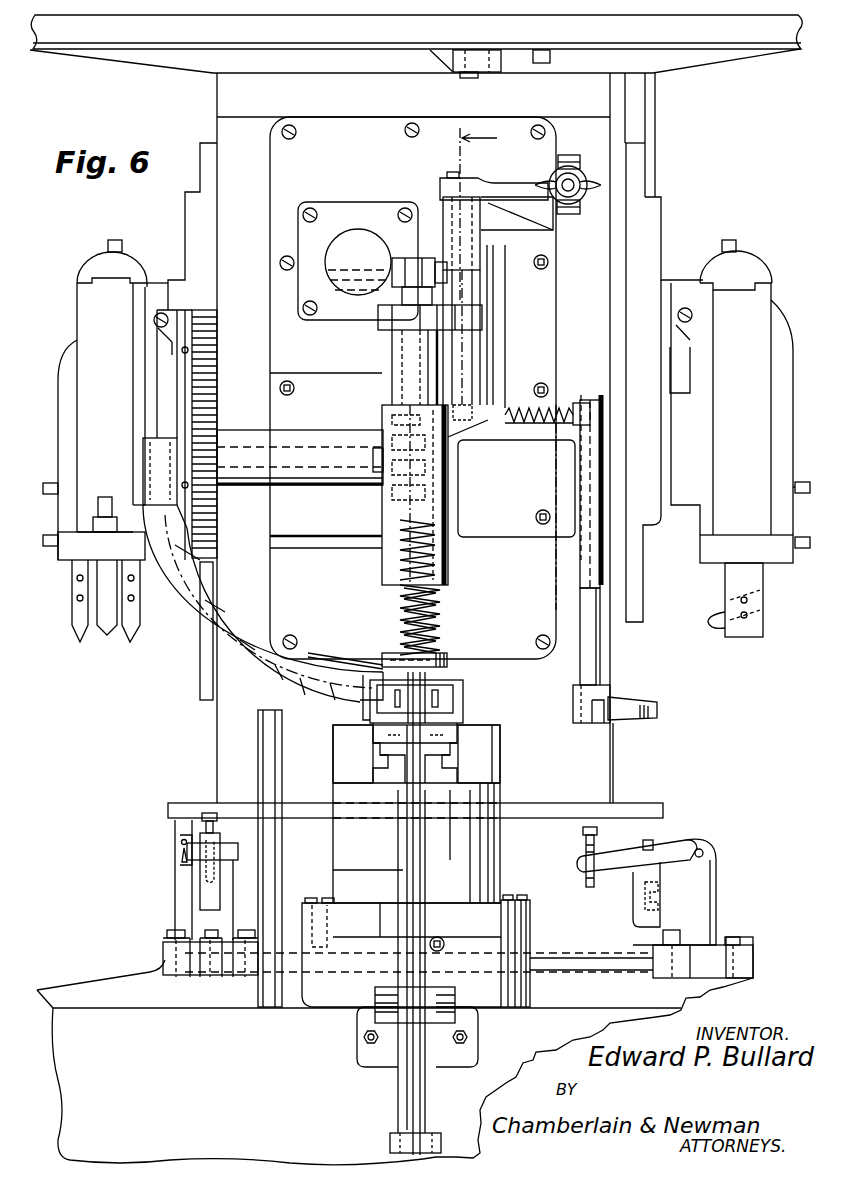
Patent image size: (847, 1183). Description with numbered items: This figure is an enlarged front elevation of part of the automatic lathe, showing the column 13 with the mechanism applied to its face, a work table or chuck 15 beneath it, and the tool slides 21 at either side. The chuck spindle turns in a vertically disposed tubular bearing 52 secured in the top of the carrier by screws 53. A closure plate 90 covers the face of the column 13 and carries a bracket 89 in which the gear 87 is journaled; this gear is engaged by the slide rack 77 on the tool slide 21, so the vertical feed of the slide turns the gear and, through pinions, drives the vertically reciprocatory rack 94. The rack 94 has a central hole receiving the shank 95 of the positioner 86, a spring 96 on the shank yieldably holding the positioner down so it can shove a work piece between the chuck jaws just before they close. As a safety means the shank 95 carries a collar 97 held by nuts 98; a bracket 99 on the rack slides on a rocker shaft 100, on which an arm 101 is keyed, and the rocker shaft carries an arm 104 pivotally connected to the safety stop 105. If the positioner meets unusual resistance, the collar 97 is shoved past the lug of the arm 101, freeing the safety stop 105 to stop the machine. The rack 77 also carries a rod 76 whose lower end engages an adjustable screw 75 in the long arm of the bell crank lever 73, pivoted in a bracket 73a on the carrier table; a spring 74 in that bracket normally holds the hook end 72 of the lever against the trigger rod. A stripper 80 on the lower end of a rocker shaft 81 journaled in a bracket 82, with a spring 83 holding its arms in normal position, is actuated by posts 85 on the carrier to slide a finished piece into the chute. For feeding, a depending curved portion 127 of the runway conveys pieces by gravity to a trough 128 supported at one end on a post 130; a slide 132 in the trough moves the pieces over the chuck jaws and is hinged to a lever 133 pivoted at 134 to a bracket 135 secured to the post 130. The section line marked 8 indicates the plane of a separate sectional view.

The section line / vertical rod 8 is at (433, 1084).
The column 13 is at (606, 743).
The work table or chuck 15 is at (500, 793).
The tool slides 21 is at (78, 316).
The tubular bearings 52 is at (343, 912).
The screws 53 is at (512, 900).
The hook end 72 is at (716, 889).
The bell crank lever 73 is at (210, 897).
The bracket 73a is at (222, 918).
The spring 74 is at (640, 897).
The adjustable screw 75 is at (218, 835).
The rod 76 is at (205, 700).
The slide rack 77 is at (212, 388).
The stripper 80 is at (645, 706).
The rocker shaft 81 is at (585, 607).
The bracket 82 is at (519, 477).
The spring 83 is at (560, 412).
The posts 85 is at (282, 745).
The positioner 86 is at (440, 658).
The gear 87 is at (212, 492).
The bracket 89 is at (281, 492).
The closure plate 90 is at (511, 645).
The rack 94 is at (400, 377).
The shank 95 is at (440, 598).
The spring 96 is at (440, 613).
The collar 97 is at (374, 292).
The nuts 98 is at (403, 258).
The bracket 99 is at (390, 318).
The rocker shaft 100 is at (470, 346).
The arm 101 is at (446, 262).
The arm 104 is at (503, 186).
The safety stop 105 is at (583, 206).
The depending curved portion 127 is at (222, 615).
The trough 128 is at (464, 704).
The post 130 is at (406, 838).
The slide 132 is at (426, 692).
The lever 133 is at (414, 858).
The pivot connection 134 is at (450, 1003).
The bracket 135 is at (456, 1058).